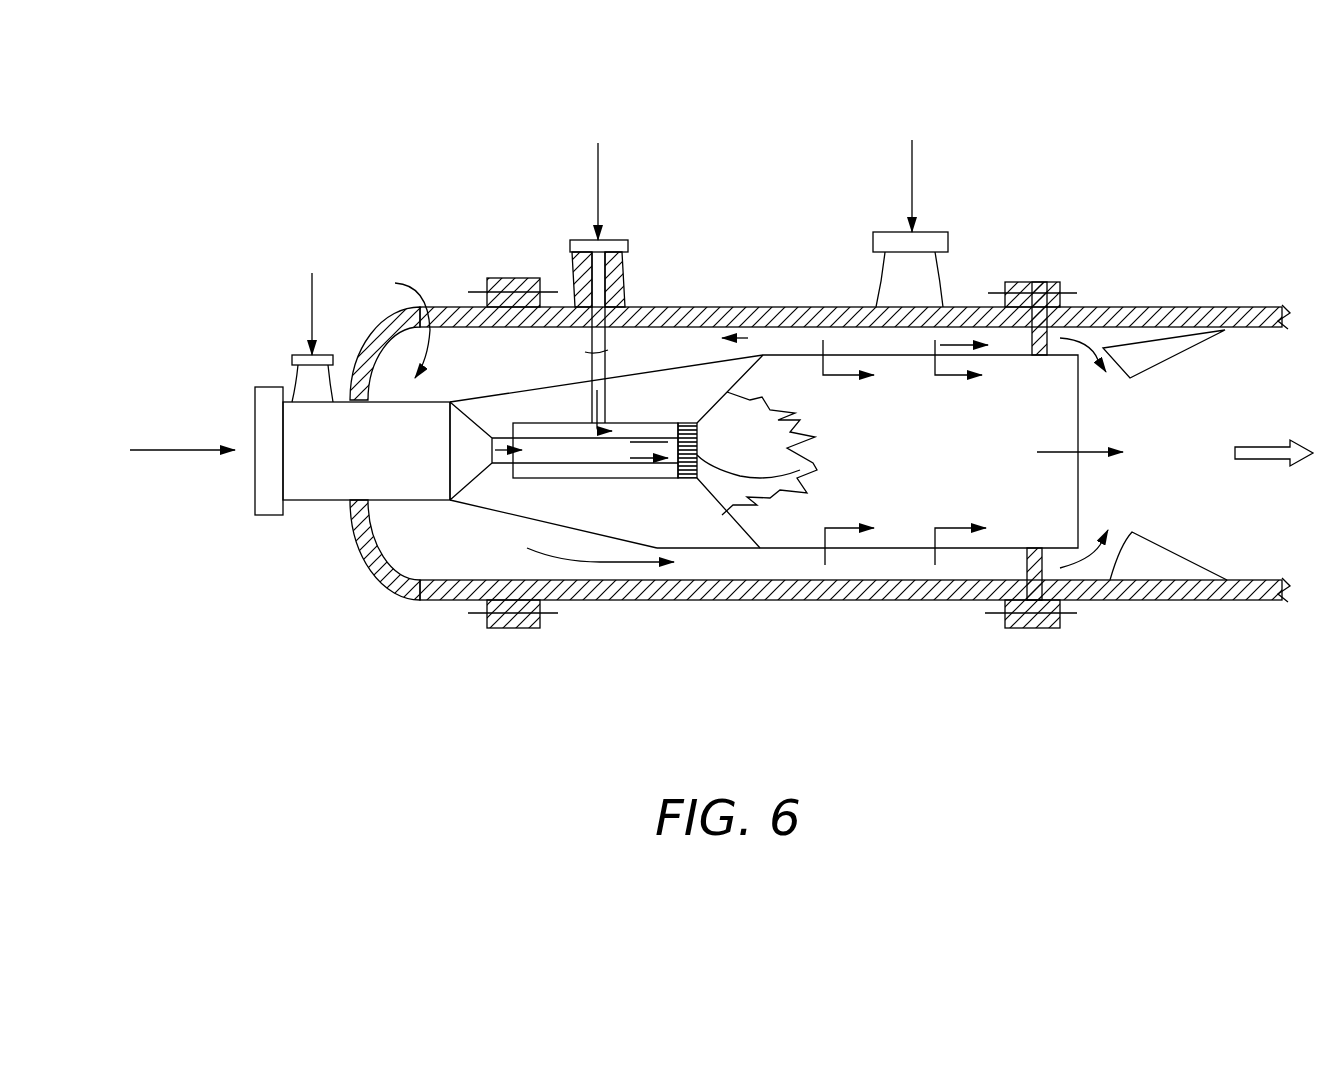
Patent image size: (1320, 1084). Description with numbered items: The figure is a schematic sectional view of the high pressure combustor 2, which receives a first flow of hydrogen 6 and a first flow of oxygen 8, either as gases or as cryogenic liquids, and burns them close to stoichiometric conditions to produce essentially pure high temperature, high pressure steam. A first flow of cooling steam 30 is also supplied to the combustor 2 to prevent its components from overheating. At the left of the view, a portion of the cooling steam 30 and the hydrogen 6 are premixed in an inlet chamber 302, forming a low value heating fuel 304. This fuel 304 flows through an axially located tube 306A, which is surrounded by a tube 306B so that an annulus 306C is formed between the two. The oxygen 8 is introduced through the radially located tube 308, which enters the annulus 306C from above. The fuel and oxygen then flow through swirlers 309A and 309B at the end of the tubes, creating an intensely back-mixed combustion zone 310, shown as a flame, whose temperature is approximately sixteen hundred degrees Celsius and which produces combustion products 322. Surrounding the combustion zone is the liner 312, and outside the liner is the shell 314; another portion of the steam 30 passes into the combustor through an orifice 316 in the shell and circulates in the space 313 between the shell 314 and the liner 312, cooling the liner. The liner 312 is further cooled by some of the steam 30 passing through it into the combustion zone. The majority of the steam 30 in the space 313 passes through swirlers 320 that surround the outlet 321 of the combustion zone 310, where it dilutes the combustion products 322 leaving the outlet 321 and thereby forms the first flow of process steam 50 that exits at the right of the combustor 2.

The high pressure combustor 2 is at (1158, 168).
The first flow of hydrogen 6 is at (312, 296).
The first flow of oxygen 8 is at (598, 177).
The first flow of cooling steam 30 is at (178, 450).
The first flow of process steam 50 is at (1272, 447).
The inlet chamber 302 is at (312, 502).
The low value heating fuel 304 is at (480, 470).
The axially located tube 306A is at (546, 423).
The tube 306B is at (660, 479).
The annulus 306C is at (601, 478).
The radially located tube 308 is at (608, 350).
The swirler 309A is at (698, 424).
The swirler 309B is at (800, 470).
The combustion zone 310 is at (762, 455).
The liner 312 is at (808, 356).
The space 313 is at (892, 357).
The shell 314 is at (712, 307).
The orifice 316 is at (935, 232).
The swirlers 320 is at (1042, 345).
The outlet 321 is at (1080, 474).
The combustion products 322 is at (1056, 452).